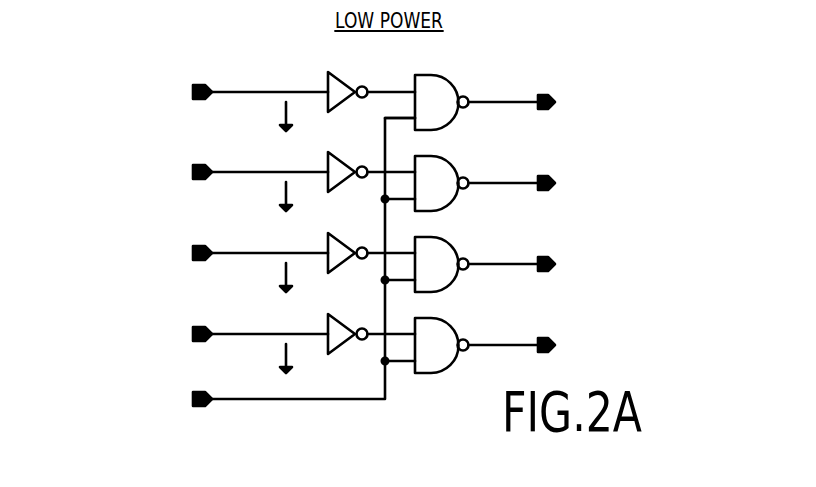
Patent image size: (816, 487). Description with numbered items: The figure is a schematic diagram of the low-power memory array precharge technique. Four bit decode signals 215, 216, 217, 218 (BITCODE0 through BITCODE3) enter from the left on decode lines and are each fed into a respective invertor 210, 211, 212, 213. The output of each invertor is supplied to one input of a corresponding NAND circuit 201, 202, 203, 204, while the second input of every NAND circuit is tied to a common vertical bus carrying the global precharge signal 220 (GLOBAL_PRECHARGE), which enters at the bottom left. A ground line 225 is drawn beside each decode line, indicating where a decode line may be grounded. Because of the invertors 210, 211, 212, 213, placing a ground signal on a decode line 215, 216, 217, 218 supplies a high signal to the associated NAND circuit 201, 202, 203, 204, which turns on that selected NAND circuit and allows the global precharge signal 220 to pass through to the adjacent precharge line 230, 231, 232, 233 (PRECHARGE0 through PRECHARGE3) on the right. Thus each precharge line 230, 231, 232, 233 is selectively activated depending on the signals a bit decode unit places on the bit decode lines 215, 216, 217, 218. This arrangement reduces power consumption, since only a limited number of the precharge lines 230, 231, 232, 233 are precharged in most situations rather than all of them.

The NAND circuit 201 is at (447, 78).
The NAND circuit 202 is at (447, 159).
The NAND circuit 203 is at (447, 240).
The NAND circuit 204 is at (447, 321).
The invertor 210 is at (328, 73).
The invertor 211 is at (343, 154).
The invertor 212 is at (343, 235).
The invertor 213 is at (343, 316).
The bit decode signal 215 is at (102, 92).
The bit decode signal 216 is at (102, 172).
The bit decode signal 217 is at (102, 253).
The bit decode signal 218 is at (102, 334).
The global precharge signal 220 is at (100, 416).
The ground line 225 is at (281, 115).
The precharge line 230 is at (668, 102).
The precharge line 231 is at (668, 183).
The precharge line 232 is at (668, 264).
The precharge line 233 is at (668, 345).